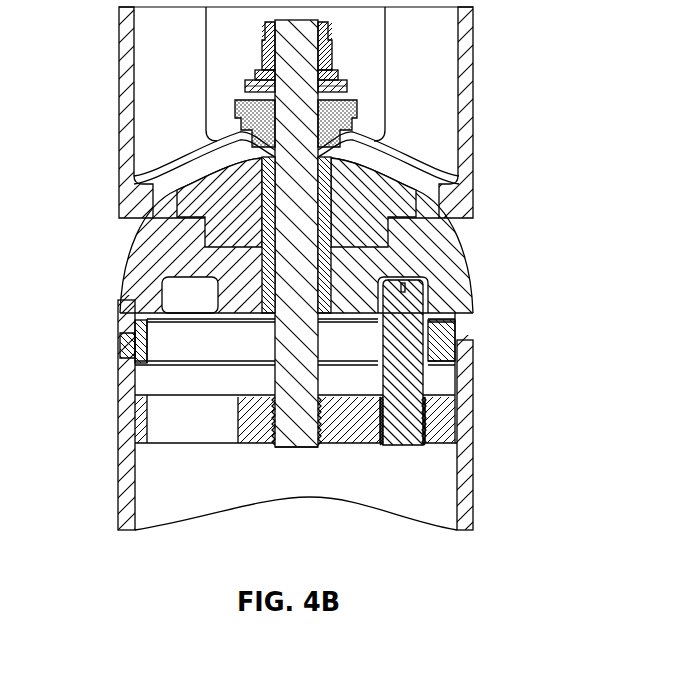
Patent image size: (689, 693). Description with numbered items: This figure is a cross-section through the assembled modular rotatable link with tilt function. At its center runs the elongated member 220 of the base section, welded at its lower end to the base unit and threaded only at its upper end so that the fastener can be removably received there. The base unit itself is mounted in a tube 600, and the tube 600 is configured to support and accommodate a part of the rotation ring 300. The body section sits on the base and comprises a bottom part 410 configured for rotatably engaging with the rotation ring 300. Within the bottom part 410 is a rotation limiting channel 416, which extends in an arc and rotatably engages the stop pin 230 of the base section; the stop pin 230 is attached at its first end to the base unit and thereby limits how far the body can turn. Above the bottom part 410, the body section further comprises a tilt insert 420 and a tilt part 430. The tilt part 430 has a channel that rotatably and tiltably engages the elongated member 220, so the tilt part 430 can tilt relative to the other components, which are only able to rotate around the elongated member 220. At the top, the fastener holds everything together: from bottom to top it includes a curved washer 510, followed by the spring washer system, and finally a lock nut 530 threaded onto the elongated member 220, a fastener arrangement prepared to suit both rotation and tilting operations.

The elongated member 220 is at (285, 275).
The stop pin 230 is at (415, 325).
The rotation ring 300 is at (125, 338).
The bottom part 410 is at (447, 273).
The rotation limiting channel 416 is at (172, 307).
The tilt insert 420 is at (243, 203).
The tilt part 430 is at (463, 157).
The curved washer 510 is at (233, 120).
The lock nut 530 is at (340, 57).
The tube 600 is at (468, 470).